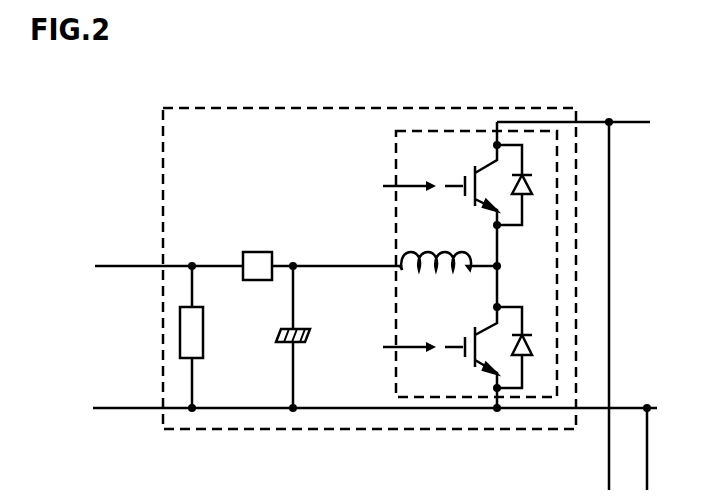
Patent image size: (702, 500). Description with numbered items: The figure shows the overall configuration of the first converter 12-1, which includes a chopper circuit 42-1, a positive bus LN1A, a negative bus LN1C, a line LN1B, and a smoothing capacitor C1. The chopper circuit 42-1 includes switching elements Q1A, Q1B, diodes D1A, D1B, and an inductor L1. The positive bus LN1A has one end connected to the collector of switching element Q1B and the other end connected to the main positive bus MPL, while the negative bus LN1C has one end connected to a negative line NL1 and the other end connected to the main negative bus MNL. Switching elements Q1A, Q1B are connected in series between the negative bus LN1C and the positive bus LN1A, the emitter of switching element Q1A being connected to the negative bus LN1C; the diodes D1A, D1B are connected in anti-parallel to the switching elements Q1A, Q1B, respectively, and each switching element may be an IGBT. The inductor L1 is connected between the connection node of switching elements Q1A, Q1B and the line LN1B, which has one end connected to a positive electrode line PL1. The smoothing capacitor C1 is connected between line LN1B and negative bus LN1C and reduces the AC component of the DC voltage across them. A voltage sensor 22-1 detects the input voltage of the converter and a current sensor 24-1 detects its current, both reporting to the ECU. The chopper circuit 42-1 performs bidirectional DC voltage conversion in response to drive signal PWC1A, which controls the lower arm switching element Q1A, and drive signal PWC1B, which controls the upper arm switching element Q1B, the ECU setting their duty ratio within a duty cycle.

The converter (1) 12-1 is at (310, 108).
The chopper circuit 42-1 is at (408, 131).
The voltage sensor 22-1 is at (180, 333).
The current sensor 24-1 is at (262, 281).
The smoothing capacitor C1 is at (283, 347).
The inductor L1 is at (448, 245).
The switching element Q1A is at (460, 347).
The switching element Q1B is at (458, 184).
The diode D1A is at (536, 339).
The diode D1B is at (531, 197).
The drive signal PWC1A is at (377, 346).
The drive signal PWC1B is at (378, 185).
The positive electrode line PL1 is at (112, 266).
The negative line NL1 is at (108, 408).
The positive bus LN1A is at (555, 122).
The line LN1B is at (210, 266).
The negative bus LN1C is at (568, 410).
The main positive bus MPL is at (632, 122).
The main negative bus MNL is at (632, 408).